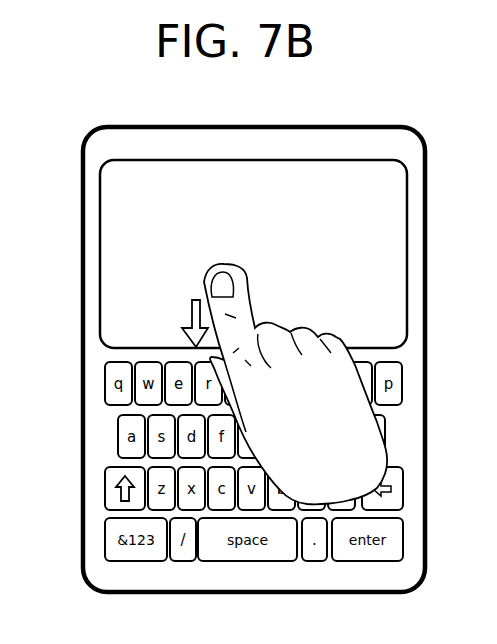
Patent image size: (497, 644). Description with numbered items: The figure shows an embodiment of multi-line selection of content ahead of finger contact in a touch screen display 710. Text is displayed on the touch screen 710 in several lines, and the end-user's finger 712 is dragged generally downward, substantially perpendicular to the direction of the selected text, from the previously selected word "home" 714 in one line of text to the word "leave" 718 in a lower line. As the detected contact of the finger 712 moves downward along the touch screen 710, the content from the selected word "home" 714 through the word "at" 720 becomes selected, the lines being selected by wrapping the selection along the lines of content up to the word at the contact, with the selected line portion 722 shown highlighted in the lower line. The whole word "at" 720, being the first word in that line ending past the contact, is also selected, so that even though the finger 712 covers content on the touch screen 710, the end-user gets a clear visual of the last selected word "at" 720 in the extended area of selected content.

The touch screen display 710 is at (325, 150).
The word "home" 714 is at (265, 178).
The selected text line 722 is at (113, 290).
The word "at" 720 is at (266, 293).
The word "leave" 718 is at (174, 298).
The end-user's finger 712 is at (270, 317).